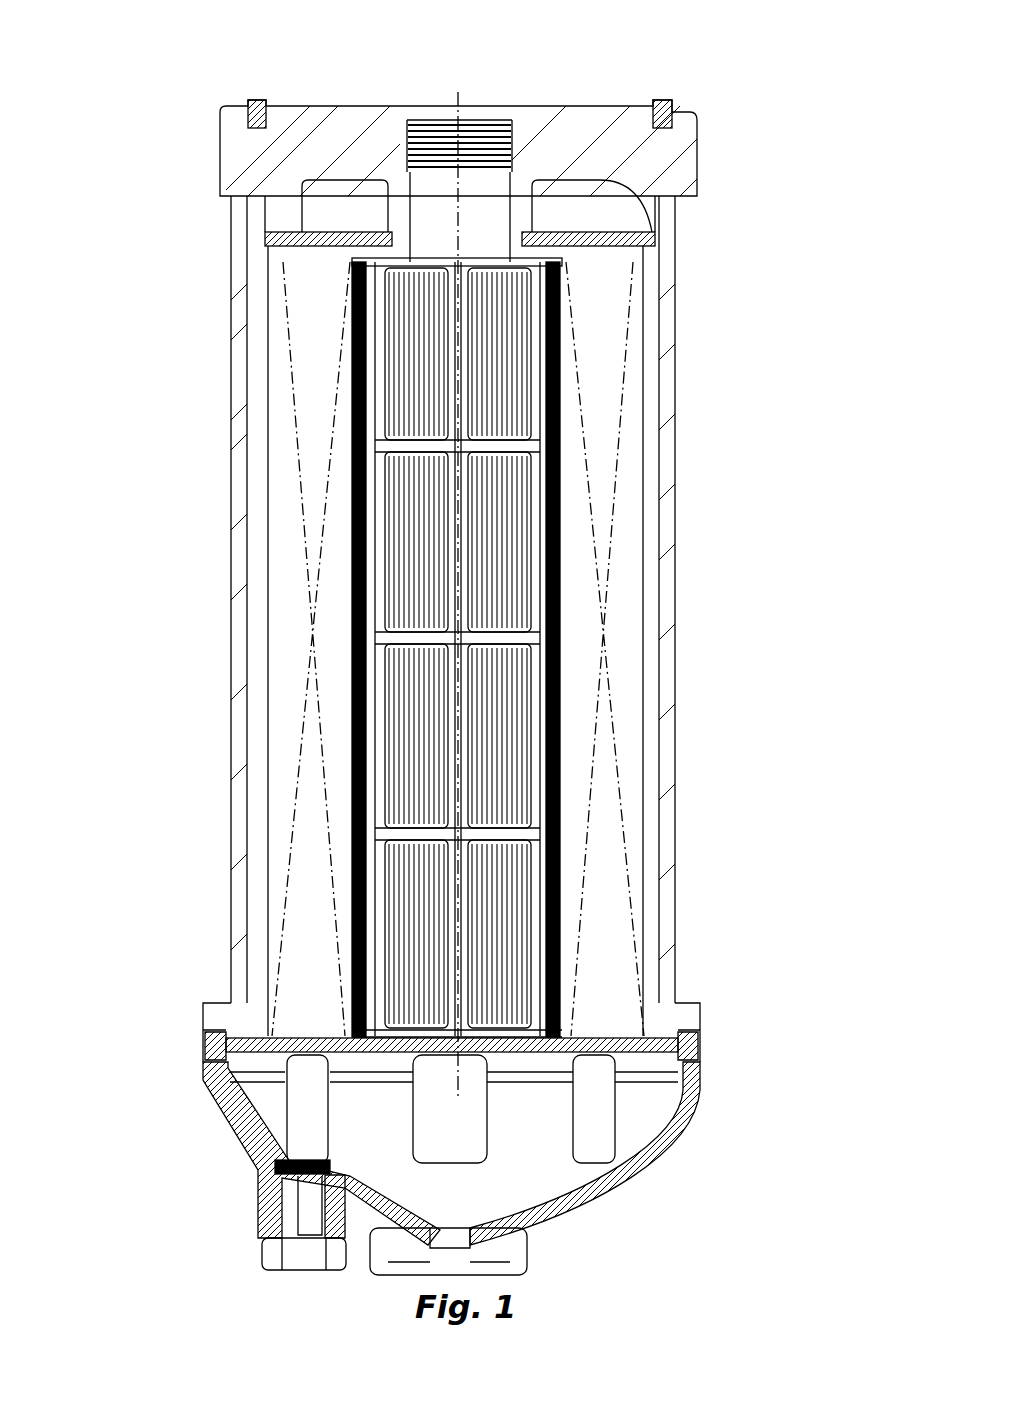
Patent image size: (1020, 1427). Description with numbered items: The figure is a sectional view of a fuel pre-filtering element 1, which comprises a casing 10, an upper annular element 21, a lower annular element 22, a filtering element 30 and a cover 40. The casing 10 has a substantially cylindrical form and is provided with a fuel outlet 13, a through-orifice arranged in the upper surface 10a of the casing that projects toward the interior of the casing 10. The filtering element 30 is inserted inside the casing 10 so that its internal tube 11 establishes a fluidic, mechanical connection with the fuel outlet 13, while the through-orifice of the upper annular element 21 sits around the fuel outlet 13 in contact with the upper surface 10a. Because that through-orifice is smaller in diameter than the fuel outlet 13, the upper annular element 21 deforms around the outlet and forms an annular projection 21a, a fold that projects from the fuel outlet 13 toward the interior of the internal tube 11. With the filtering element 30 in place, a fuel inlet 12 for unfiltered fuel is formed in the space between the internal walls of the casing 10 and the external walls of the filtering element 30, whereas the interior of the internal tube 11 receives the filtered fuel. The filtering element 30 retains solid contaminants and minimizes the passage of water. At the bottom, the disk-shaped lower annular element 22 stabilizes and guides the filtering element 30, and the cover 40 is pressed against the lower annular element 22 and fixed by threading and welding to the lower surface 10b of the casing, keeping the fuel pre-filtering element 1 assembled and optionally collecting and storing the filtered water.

The fuel pre-filtering element 1 is at (739, 114).
The casing 10 is at (672, 500).
The upper surface of the casing 10a is at (572, 180).
The lower surface of the casing 10b is at (697, 1050).
The internal tube 11 is at (465, 830).
The fuel inlet 12 is at (255, 690).
The fuel outlet 13 is at (511, 132).
The upper annular element 21 is at (318, 232).
The annular projection 21a is at (527, 260).
The lower annular element 22 is at (292, 1038).
The filtering element 30 is at (305, 588).
The cover 40 is at (660, 1134).